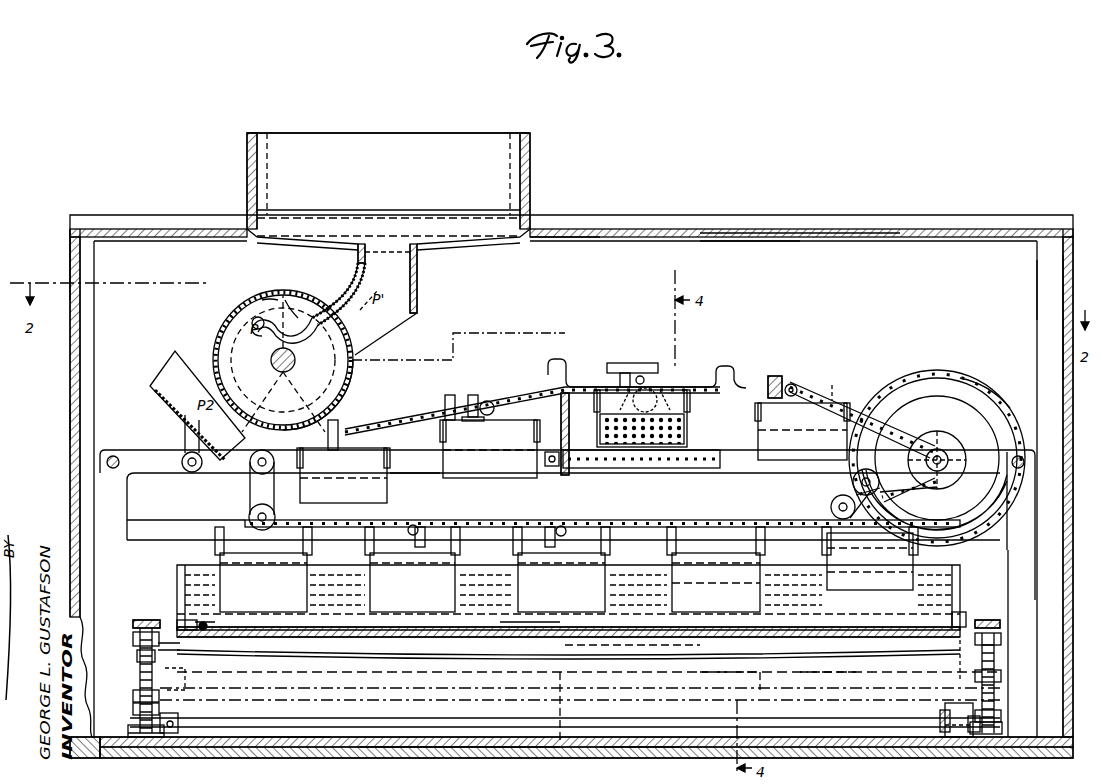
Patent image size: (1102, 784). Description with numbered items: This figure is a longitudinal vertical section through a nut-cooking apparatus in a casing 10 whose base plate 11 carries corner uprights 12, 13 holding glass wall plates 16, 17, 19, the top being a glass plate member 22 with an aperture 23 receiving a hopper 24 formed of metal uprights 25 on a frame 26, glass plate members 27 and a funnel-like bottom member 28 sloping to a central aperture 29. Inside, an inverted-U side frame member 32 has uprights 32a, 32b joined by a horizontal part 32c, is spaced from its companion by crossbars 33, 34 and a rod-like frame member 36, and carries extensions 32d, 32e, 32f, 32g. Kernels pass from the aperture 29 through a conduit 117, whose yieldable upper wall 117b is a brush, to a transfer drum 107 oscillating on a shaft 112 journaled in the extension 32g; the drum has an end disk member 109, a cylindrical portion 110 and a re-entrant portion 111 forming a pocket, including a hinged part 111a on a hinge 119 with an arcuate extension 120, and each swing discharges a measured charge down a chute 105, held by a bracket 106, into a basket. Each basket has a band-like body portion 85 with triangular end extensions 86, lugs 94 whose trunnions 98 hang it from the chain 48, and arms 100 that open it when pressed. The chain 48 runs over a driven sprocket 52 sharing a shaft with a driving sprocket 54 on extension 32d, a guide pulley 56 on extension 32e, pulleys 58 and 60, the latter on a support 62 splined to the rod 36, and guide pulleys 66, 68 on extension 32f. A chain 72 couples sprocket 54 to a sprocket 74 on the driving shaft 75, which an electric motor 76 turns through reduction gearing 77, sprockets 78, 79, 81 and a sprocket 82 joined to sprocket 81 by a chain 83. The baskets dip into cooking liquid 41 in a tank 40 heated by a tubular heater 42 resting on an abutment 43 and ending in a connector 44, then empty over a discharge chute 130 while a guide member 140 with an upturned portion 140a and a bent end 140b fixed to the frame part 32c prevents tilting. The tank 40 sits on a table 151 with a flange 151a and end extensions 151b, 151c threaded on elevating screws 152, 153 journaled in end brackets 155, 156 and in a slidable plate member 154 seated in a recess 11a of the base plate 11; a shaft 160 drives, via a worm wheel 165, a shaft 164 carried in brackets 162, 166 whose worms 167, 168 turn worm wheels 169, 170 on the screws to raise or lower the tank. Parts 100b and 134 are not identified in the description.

The casing 10 is at (1069, 291).
The base plate 11 is at (476, 750).
The recess 11a is at (632, 747).
The upright 12 is at (70, 254).
The upright 13 is at (1040, 288).
The plate member 16 is at (745, 241).
The plate member 17 is at (1063, 264).
The plate member 19 is at (72, 420).
The plate member 22 is at (826, 232).
The aperture 23 is at (535, 240).
The hopper 24 is at (537, 162).
The upright corner frame member 25 is at (247, 160).
The frame 26 is at (260, 240).
The plate member 27 is at (430, 133).
The funnel-like bottom member 28 is at (470, 248).
The aperture 29 is at (420, 270).
The side frame member 32 is at (136, 479).
The upright 32a is at (127, 520).
The upright 32b is at (1020, 572).
The horizontal part 32c is at (410, 478).
The frame extension 32d is at (834, 385).
The upstanding frame extension 32e is at (676, 490).
The frame extension 32f is at (985, 490).
The upward extension 32g is at (340, 415).
The crossbar 33 is at (114, 455).
The crossbar 34 is at (1020, 452).
The frame member 36 is at (193, 530).
The cooking tank 40 is at (174, 587).
The cooking liquid 41 is at (330, 600).
The heater device 42 is at (900, 625).
The abutment 43 is at (210, 625).
The terminal or connector device 44 is at (962, 612).
The chain 48 is at (395, 428).
The driven sprocket 52 is at (775, 376).
The driving sprocket 54 is at (790, 380).
The guide and supporting pulley 56 is at (668, 385).
The pulley 58 is at (343, 475).
The pulley 60 is at (252, 498).
The support 62 is at (285, 538).
The guide pulley 66 is at (832, 508).
The guide pulley 68 is at (876, 488).
The chain 72 is at (900, 440).
The sprocket 74 is at (938, 440).
The driving shaft 75 is at (945, 452).
The electric motor 76 is at (460, 664).
The reduction gearing 77 is at (630, 640).
The sprocket 78 is at (680, 640).
The sprocket 79 is at (752, 640).
The sprocket 81 is at (825, 640).
The sprocket 82 is at (975, 390).
The chain 83 is at (900, 364).
The band-like body portion 85 is at (484, 412).
The end wall extension 86 is at (690, 433).
The lug 94 is at (490, 405).
The trunnion 98 is at (248, 505).
The arm 100 is at (295, 385).
The carrier post 100b is at (470, 388).
The chute 105 is at (160, 381).
The bracket 106 is at (192, 440).
The transfer drum 107 is at (356, 384).
The end disk member 109 is at (275, 300).
The cylindrical portion 110 is at (365, 355).
The re-entrant portion 111 is at (290, 312).
The hinged part 111a is at (258, 330).
The shaft 112 is at (296, 352).
The conduit 117 is at (425, 322).
The upper wall 117b is at (340, 300).
The hinge 119 is at (292, 305).
The arcuate extension 120 is at (252, 326).
The discharge chute 130 is at (625, 468).
The switch 134 is at (634, 362).
The guide member 140 is at (712, 370).
The upwardly curved portion 140a is at (732, 374).
The bent end portion 140b is at (560, 352).
The table 151 is at (400, 640).
The flange 151a is at (178, 620).
The end extension 151b is at (155, 672).
The end extension 151c is at (975, 645).
The elevating screw 152 is at (136, 668).
The elevating screw 153 is at (1000, 650).
The plate member 154 is at (286, 737).
The end bracket 155 is at (135, 622).
The end bracket 156 is at (1000, 620).
The horizontal shaft 160 is at (940, 708).
The upstanding bracket 162 is at (1005, 676).
The shaft 164 is at (378, 740).
The worm wheel 165 is at (942, 745).
The upstanding bracket 166 is at (178, 718).
The worm 167 is at (165, 735).
The worm 168 is at (1002, 712).
The worm wheel 169 is at (130, 737).
The worm wheel 170 is at (1005, 728).